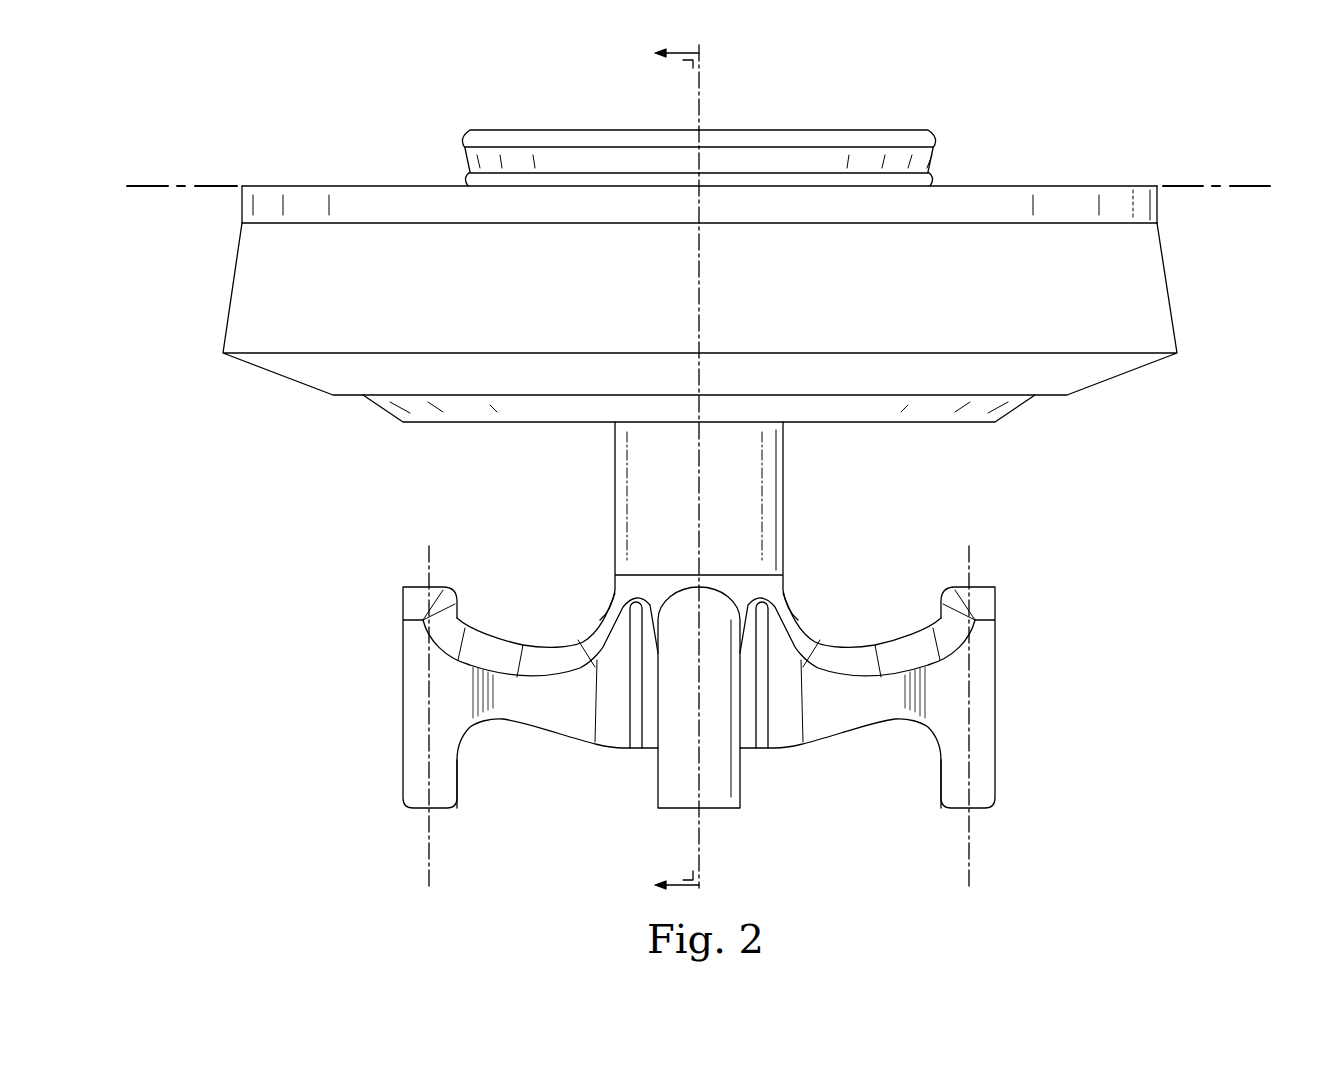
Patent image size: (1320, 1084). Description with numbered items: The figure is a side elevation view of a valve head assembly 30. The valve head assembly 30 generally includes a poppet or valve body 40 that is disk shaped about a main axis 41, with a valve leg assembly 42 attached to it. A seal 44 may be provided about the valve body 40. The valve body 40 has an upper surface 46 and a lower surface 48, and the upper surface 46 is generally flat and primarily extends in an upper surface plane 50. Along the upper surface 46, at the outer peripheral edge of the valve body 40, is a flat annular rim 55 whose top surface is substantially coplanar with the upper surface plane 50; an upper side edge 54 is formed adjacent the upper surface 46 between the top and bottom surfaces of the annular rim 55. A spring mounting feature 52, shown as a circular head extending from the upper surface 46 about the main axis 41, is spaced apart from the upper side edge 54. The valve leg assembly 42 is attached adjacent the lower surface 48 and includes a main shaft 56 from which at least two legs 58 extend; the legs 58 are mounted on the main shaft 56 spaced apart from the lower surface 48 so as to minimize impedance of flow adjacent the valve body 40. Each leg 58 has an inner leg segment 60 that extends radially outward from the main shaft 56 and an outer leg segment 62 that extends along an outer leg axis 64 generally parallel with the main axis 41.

The valve head assembly 30 is at (316, 98).
The valve body 40 is at (1121, 182).
The main axis 41 is at (697, 110).
The valve leg assembly 42 is at (1024, 742).
The seal 44 is at (1178, 288).
The upper surface 46 is at (1040, 186).
The lower surface 48 is at (980, 424).
The upper surface plane 50 is at (1250, 186).
The spring mounting feature 52 is at (846, 130).
The upper side edge 54 is at (240, 208).
The annular rim 55 is at (268, 186).
The main shaft 56 is at (615, 498).
The leg 58 is at (530, 746).
The inner leg segment 60 is at (537, 693).
The outer leg segment 62 is at (413, 703).
The outer leg axis 64 is at (427, 862).